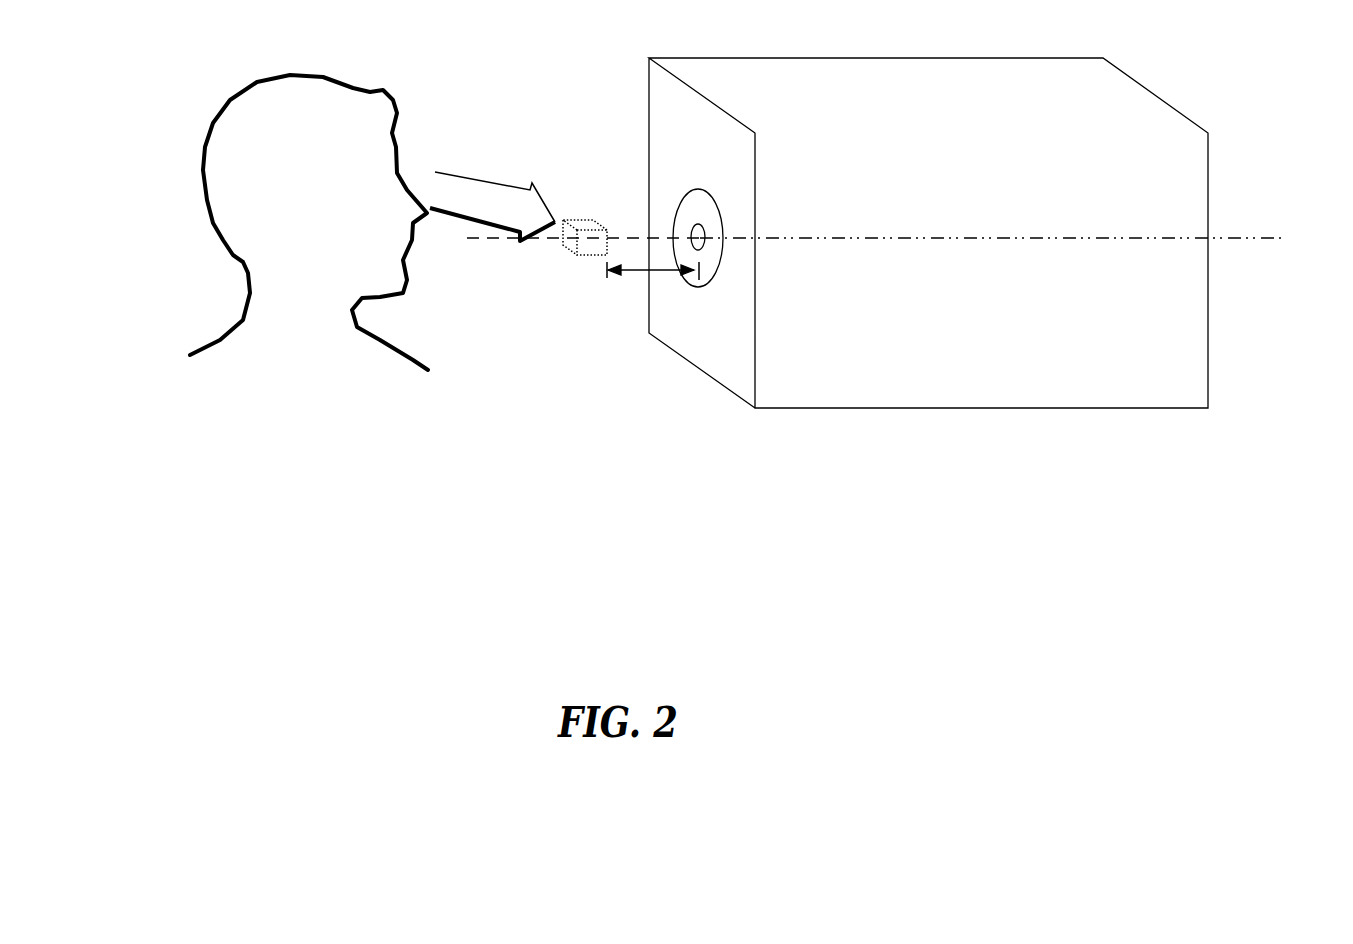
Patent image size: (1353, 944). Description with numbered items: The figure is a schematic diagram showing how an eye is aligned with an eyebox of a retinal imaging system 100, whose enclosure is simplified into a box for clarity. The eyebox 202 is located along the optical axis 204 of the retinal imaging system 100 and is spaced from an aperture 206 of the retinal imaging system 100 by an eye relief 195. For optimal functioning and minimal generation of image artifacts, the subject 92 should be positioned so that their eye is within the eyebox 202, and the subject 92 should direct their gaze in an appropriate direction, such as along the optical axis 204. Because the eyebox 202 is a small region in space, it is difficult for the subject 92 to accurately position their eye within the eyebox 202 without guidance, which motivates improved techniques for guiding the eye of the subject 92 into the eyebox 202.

The subject 92 is at (202, 167).
The retinal imaging system 100 is at (1155, 408).
The eye relief 195 is at (636, 283).
The eyebox 202 is at (583, 220).
The optical axis 204 is at (1262, 238).
The aperture 206 is at (705, 248).